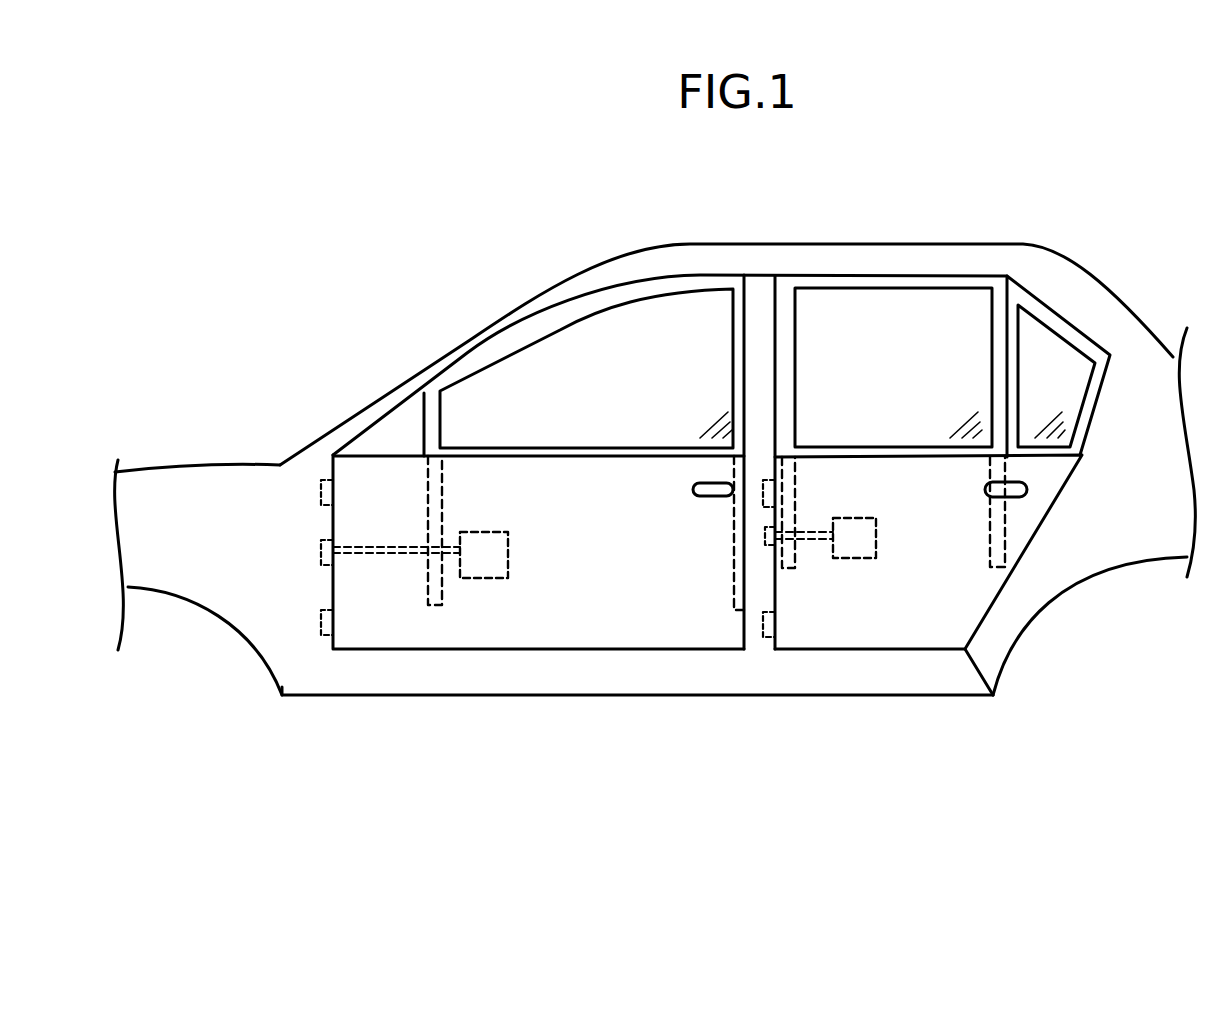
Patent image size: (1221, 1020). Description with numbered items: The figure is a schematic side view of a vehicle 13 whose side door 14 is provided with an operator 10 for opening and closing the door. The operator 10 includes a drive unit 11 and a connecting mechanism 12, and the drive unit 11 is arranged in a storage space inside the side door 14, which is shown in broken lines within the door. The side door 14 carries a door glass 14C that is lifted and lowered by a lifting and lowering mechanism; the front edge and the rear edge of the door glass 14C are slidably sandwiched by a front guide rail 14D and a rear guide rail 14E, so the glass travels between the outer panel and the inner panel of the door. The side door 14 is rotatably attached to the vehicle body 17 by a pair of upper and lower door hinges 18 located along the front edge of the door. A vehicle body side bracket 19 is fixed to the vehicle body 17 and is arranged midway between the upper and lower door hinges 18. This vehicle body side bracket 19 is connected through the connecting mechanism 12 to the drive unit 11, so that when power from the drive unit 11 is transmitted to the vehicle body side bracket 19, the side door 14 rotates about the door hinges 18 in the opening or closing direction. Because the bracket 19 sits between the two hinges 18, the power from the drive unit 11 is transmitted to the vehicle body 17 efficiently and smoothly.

The operator 10 is at (657, 528).
The drive unit 11 is at (486, 532).
The connecting mechanism 12 is at (390, 556).
The vehicle 13 is at (1073, 283).
The side door 14 is at (543, 627).
The door glass 14C is at (545, 377).
The front guide rail 14D is at (433, 492).
The rear guide rail 14E is at (738, 605).
The vehicle body 17 is at (422, 680).
The door hinges 18 is at (322, 490).
The vehicle body side bracket 19 is at (320, 553).